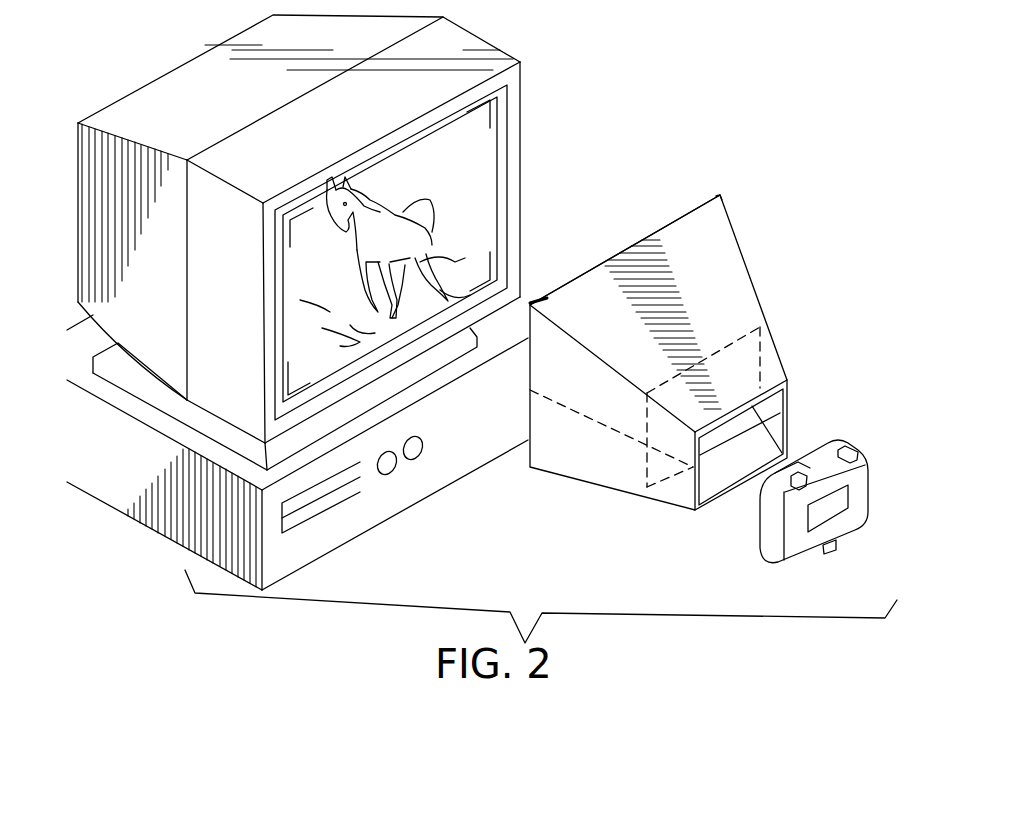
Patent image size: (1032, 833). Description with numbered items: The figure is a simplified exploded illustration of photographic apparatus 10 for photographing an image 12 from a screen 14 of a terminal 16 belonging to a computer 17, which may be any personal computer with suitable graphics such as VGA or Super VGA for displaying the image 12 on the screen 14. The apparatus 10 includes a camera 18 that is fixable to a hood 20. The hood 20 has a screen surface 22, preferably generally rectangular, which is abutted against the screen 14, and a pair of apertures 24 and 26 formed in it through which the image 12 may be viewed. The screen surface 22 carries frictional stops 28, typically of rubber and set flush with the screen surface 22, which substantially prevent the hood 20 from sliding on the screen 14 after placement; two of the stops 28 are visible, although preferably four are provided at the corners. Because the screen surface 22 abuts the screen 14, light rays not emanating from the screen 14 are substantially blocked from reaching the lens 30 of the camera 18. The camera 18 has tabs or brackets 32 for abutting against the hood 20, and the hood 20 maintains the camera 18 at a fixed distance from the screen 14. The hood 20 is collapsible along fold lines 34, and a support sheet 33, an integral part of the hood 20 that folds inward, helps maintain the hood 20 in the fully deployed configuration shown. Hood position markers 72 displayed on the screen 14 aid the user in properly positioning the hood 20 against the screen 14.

The photographic apparatus 10 is at (783, 231).
The image 12 is at (410, 220).
The screen 14 is at (485, 157).
The terminal 16 is at (217, 64).
The computer 17 is at (114, 498).
The camera 18 is at (839, 502).
The hood 20 is at (662, 355).
The screen surface 22 is at (624, 249).
The aperture 24 is at (582, 273).
The aperture 26 is at (779, 412).
The frictional stops 28 is at (722, 197).
The lens 30 is at (799, 460).
The tabs or brackets 32 is at (802, 475).
The support sheet 33 is at (762, 350).
The fold lines 34 is at (622, 434).
The hood position markers 72 is at (490, 108).